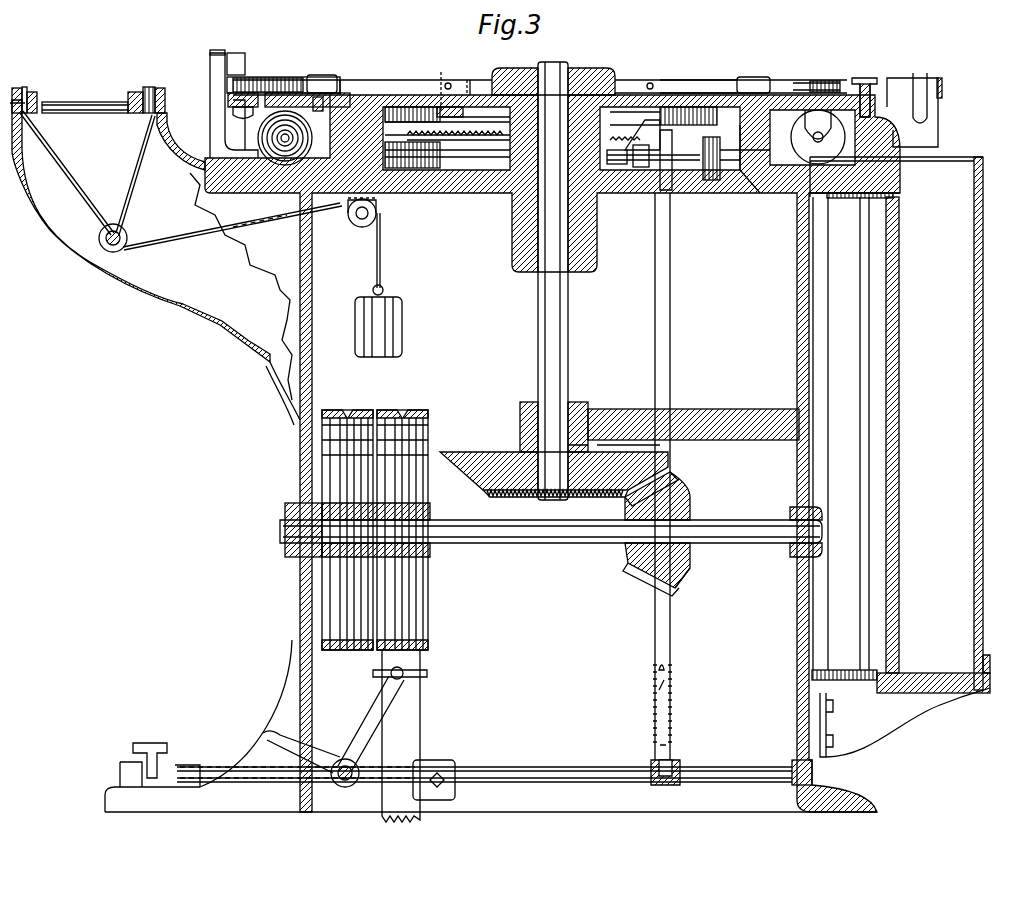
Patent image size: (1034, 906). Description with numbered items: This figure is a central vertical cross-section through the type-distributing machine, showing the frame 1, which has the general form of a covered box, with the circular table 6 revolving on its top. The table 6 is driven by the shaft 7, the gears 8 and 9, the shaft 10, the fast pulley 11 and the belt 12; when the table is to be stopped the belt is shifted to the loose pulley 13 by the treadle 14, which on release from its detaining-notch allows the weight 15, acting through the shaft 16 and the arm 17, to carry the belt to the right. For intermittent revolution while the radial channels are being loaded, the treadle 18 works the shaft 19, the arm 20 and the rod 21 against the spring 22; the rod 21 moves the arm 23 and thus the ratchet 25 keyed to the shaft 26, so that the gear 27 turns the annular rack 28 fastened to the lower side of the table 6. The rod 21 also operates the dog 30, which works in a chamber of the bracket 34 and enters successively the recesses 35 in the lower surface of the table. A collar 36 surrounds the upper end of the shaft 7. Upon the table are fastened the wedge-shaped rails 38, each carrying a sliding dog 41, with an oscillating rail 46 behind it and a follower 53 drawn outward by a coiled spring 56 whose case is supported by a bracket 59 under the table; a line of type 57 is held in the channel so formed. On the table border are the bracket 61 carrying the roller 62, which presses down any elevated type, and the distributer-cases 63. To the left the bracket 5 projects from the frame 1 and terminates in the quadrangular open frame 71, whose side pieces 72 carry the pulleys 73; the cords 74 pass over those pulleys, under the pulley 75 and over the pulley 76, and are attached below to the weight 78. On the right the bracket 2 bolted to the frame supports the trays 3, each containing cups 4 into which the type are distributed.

The frame 1 is at (502, 452).
The bracket 2 is at (990, 690).
The tray 3 is at (990, 660).
The cup 4 is at (900, 425).
The bracket 5 is at (156, 262).
The circular table 6 is at (410, 97).
The shaft 7 is at (543, 281).
The gear 8 is at (554, 466).
The gear 9 is at (662, 534).
The shaft 10 is at (551, 540).
The fast pulley 11 is at (347, 522).
The belt 12 is at (401, 736).
The loose pulley 13 is at (426, 425).
The treadle 14 is at (291, 743).
The weight 15 is at (434, 780).
The shaft 16 is at (345, 784).
The arm 17 is at (382, 718).
The treadle 18 is at (160, 755).
The shaft 19 is at (484, 763).
The arm 20 is at (665, 782).
The rod 21 is at (664, 476).
The spring 22 is at (676, 705).
The arm 23 is at (653, 166).
The ratchet 25 is at (670, 196).
The shaft 26 is at (700, 170).
The gear 27 is at (740, 169).
The annular rack 28 is at (447, 137).
The dog 30 is at (660, 120).
The bracket 34 is at (635, 136).
The recess 35 is at (441, 83).
The collar 36 is at (553, 71).
The wedge-shaped rail 38 is at (753, 84).
The sliding dog 41 is at (862, 80).
The oscillating rail 46 is at (362, 84).
The follower 53 is at (320, 76).
The coiled spring 56 is at (295, 138).
The line of type 57 is at (262, 80).
The bracket 59 is at (579, 130).
The bracket 61 is at (210, 125).
The roller 62 is at (233, 53).
The distributer-case 63 is at (914, 110).
The quadrangular open frame 71 is at (69, 98).
The side piece 72 is at (88, 91).
The pulley 73 is at (92, 91).
The cord 74 is at (213, 199).
The pulley 75 is at (119, 230).
The pulley 76 is at (355, 221).
The weight 78 is at (378, 329).